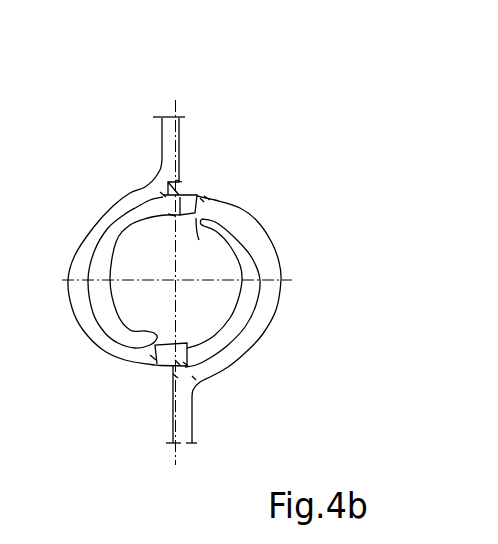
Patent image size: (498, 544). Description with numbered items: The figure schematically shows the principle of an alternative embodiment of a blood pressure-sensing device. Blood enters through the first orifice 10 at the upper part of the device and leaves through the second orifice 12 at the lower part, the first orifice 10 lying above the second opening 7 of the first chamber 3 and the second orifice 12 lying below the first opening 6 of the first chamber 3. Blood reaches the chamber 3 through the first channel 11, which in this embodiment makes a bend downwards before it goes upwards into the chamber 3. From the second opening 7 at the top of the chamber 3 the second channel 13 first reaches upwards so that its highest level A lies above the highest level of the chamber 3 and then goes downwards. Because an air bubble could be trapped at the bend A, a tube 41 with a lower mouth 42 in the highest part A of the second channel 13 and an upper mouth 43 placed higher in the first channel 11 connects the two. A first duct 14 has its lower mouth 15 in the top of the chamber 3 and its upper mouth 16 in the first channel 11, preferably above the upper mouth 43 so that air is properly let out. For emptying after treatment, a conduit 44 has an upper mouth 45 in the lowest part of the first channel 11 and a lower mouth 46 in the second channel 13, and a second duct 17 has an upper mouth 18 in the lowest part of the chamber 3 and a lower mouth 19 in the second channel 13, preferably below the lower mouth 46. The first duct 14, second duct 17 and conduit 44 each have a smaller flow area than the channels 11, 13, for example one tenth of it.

The first chamber 3 is at (222, 301).
The first opening 6 is at (127, 327).
The second opening 7 is at (202, 245).
The first orifice 10 is at (169, 117).
The first channel 11 is at (118, 201).
The second orifice 12 is at (187, 447).
The second channel 13 is at (250, 236).
The first duct 14 is at (179, 184).
The lower mouth 15 is at (173, 217).
The upper mouth 16 is at (179, 180).
The second duct 17 is at (175, 377).
The upper mouth 18 is at (190, 340).
The lower mouth 19 is at (194, 378).
The tube 41 is at (203, 200).
The lower mouth 42 is at (197, 199).
The upper mouth 43 is at (163, 193).
The conduit 44 is at (178, 363).
The upper mouth 45 is at (173, 363).
The lower mouth 46 is at (183, 363).
The highest level (bend) of the second channel A is at (207, 198).